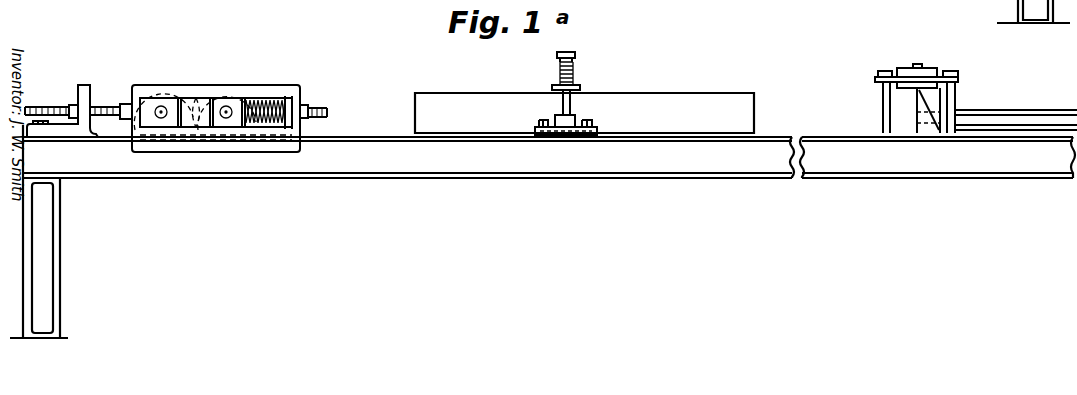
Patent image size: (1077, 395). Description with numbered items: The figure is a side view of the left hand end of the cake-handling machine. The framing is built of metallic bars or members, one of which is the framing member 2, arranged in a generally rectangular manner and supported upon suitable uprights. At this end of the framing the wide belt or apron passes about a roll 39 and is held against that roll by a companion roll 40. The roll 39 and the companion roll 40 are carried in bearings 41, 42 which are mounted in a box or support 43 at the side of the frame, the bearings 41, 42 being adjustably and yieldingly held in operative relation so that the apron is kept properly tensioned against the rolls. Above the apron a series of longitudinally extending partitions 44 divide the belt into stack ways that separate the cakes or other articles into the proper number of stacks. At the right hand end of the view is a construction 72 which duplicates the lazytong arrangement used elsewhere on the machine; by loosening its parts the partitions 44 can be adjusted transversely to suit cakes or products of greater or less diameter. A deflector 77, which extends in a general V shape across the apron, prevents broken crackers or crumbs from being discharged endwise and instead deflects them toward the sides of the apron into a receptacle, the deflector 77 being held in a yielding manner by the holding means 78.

The framing member 2 is at (43, 250).
The roll 39 is at (193, 98).
The companion roll 40 is at (218, 92).
The bearing 41 is at (164, 98).
The bearing 42 is at (246, 100).
The box or support 43 is at (134, 88).
The partition 44 is at (1010, 112).
The transverse adjustment construction 72 is at (945, 63).
The deflector 77 is at (660, 100).
The yielding holding means 78 is at (582, 50).